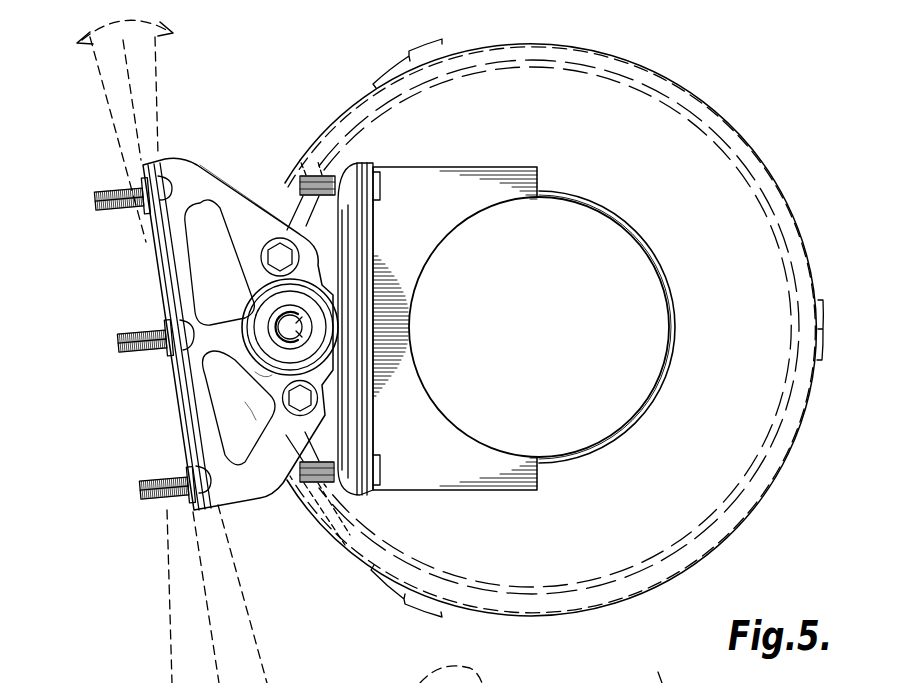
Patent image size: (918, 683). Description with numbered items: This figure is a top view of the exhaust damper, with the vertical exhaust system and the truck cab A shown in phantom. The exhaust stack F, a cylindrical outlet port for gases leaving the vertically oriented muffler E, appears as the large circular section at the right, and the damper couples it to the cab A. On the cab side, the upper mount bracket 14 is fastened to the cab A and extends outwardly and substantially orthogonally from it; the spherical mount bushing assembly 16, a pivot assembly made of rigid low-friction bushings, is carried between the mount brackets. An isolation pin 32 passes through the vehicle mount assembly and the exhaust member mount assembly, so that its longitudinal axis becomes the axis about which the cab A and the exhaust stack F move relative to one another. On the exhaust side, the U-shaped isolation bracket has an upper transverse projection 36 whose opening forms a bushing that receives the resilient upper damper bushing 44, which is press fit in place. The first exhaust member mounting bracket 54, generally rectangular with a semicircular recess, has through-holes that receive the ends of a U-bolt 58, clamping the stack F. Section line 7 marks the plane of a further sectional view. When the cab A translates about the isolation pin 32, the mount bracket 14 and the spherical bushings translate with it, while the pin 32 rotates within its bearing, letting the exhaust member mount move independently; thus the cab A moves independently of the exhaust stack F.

The upper mount bracket 14 is at (230, 492).
The spherical mount bushing assembly 16 is at (243, 266).
The isolation pin 32 is at (290, 327).
The upper transverse projection 36 is at (261, 370).
The upper damper bushing 44 is at (250, 403).
The first exhaust member mounting bracket 54 is at (395, 182).
The U-bolt 58 is at (630, 425).
The section line 7- 7 is at (113, 328).
The truck cab A is at (243, 600).
The muffler E is at (700, 92).
The exhaust stack F is at (593, 267).